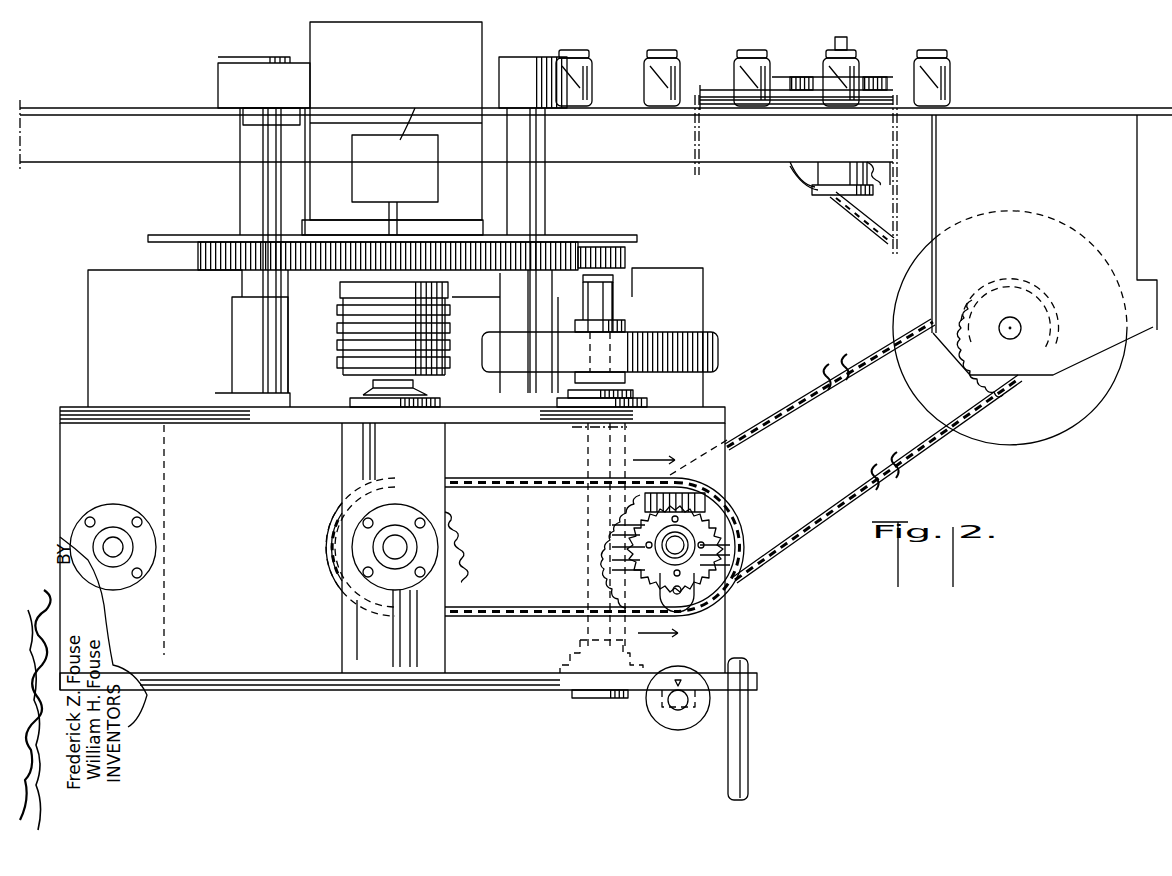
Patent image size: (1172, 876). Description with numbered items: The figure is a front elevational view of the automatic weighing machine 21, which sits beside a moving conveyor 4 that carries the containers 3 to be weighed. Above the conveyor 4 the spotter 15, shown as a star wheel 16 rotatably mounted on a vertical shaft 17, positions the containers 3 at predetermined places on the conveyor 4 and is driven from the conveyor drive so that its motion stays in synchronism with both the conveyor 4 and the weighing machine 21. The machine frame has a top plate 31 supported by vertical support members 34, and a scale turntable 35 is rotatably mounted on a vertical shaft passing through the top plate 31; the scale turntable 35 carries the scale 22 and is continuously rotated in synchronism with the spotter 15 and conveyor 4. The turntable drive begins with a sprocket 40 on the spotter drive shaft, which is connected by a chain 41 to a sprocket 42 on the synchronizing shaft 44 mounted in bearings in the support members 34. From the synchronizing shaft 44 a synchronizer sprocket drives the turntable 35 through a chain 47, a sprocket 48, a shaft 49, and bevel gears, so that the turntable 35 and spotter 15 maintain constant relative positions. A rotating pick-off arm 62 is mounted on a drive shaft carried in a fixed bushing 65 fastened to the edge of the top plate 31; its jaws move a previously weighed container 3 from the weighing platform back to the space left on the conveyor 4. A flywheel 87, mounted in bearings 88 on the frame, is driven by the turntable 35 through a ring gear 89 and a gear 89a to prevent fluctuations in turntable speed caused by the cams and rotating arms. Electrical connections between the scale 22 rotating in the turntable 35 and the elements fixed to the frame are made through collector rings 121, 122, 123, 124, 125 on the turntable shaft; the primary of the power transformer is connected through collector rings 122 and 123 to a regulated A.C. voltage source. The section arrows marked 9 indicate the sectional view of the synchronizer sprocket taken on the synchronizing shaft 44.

The container 3 is at (590, 73).
The conveyor 4 is at (997, 115).
The section line 9- 9 is at (680, 542).
The spotter 15 is at (791, 66).
The star wheel 16 is at (870, 80).
The vertical shaft 17 is at (848, 48).
The automatic weighing machine 21 is at (708, 306).
The scale 22 is at (460, 63).
The top plate 31 is at (725, 407).
The vertical support members 34 is at (435, 450).
The scale turntable 35 is at (640, 238).
The sprocket 40 is at (1040, 323).
The chain 41 is at (866, 362).
The sprocket 42 is at (588, 551).
The synchronizing shaft 44 is at (690, 545).
The chain 47 is at (548, 480).
The sprocket 48 is at (462, 531).
The shaft 49 is at (395, 547).
The rotating arm 62 is at (257, 78).
The fixed bushing 65 is at (263, 185).
The flywheel 87 is at (720, 352).
The bearings 88 is at (615, 280).
The ring gear 89 is at (570, 240).
The gear 89a is at (625, 256).
The collector ring 121 is at (337, 362).
The collector ring 122 is at (337, 345).
The collector ring 123 is at (337, 328).
The collector ring 124 is at (337, 310).
The collector ring 125 is at (340, 290).